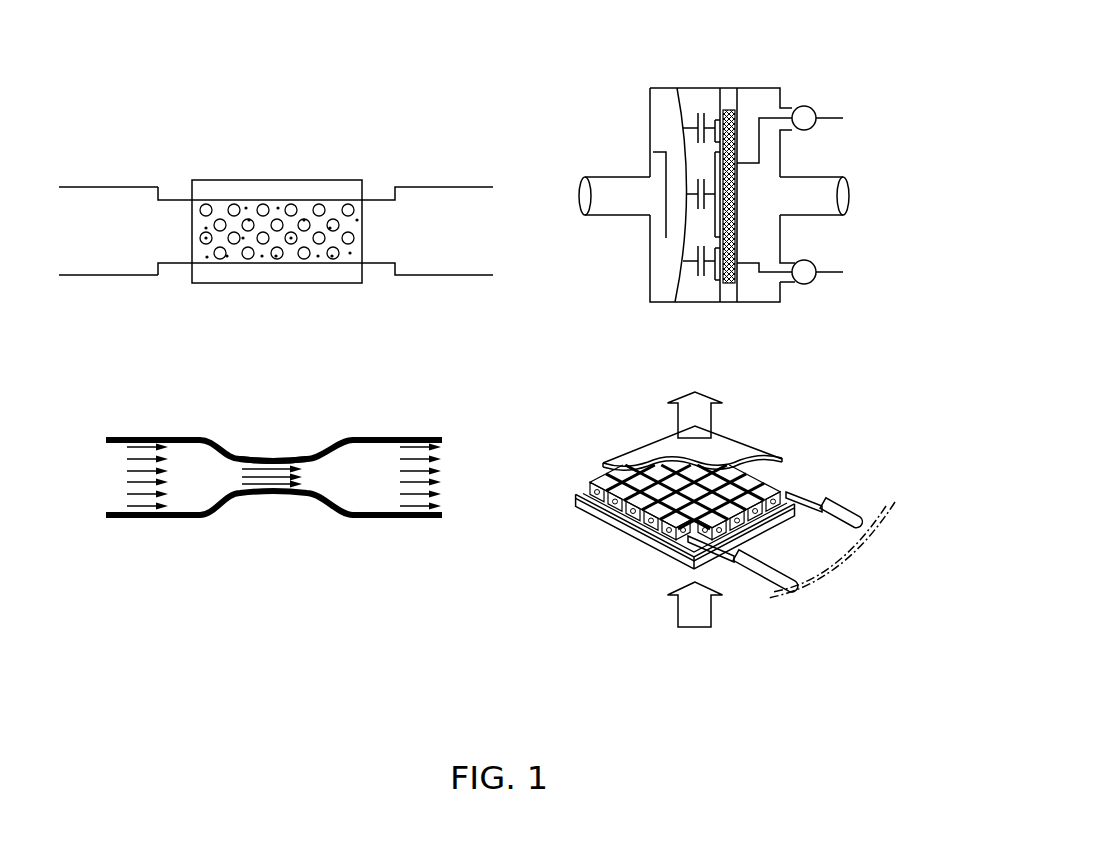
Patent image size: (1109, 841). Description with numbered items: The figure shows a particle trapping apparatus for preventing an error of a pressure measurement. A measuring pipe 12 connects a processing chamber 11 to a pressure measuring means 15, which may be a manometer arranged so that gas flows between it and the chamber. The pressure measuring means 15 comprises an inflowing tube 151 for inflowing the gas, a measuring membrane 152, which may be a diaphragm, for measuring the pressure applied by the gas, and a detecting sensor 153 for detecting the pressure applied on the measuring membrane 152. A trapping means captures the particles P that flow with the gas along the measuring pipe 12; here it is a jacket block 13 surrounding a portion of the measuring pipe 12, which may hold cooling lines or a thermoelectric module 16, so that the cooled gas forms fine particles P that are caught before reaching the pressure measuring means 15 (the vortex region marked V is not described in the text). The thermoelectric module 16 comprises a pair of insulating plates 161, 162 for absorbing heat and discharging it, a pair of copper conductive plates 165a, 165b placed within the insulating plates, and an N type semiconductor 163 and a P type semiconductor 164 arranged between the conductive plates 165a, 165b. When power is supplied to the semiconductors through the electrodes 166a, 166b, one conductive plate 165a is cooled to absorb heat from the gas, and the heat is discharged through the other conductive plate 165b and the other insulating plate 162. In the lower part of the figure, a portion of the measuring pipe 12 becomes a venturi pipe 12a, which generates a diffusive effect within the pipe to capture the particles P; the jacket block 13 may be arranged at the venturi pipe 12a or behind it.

The processing chamber 11 is at (93, 187).
The measuring pipe 12 is at (173, 200).
The venturi pipe 12a is at (280, 455).
The jacket block 13 is at (310, 180).
The pressure measuring means 15 is at (433, 187).
The inflowing tube 151 is at (610, 180).
The measuring membrane 152 is at (683, 280).
The detecting sensor 153 is at (735, 158).
The thermoelectric module 16 is at (753, 433).
The insulating plate 161 is at (620, 520).
The insulating plate 162 is at (628, 455).
The N type semiconductor 163 is at (588, 504).
The P type semiconductor 164 is at (588, 487).
The conductive plate 165a is at (690, 540).
The conductive plate 165b is at (753, 477).
The electrode 166a is at (773, 569).
The electrode 166b is at (843, 510).
The vortex V is at (204, 243).
The particles P is at (207, 260).